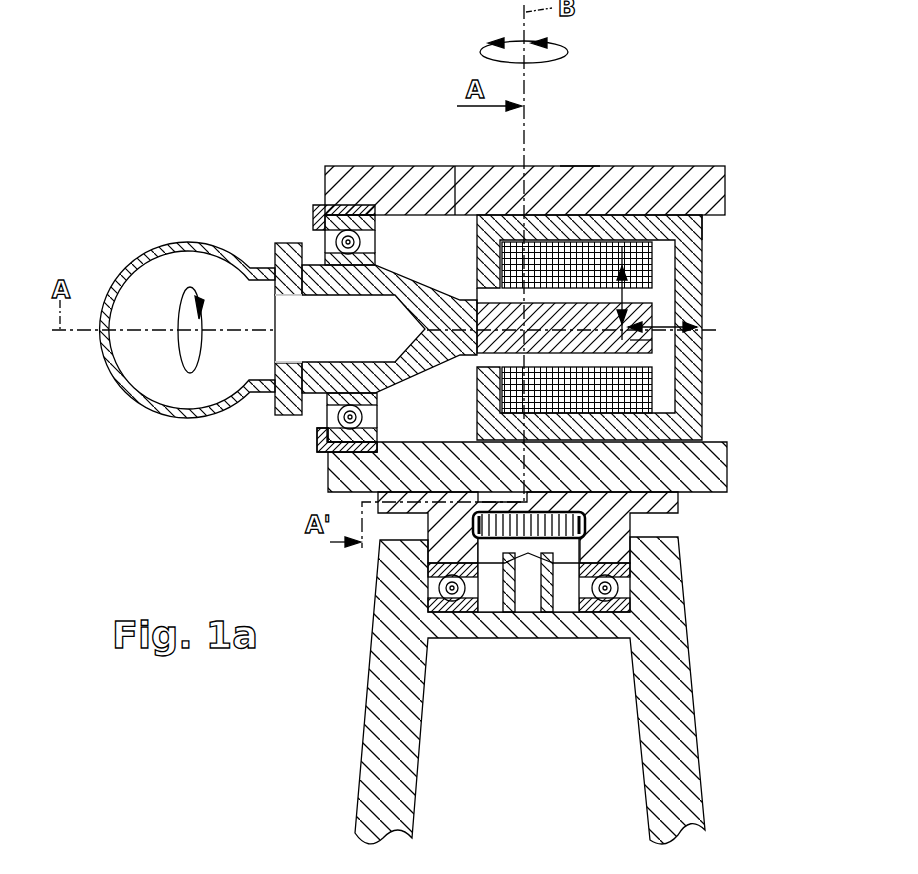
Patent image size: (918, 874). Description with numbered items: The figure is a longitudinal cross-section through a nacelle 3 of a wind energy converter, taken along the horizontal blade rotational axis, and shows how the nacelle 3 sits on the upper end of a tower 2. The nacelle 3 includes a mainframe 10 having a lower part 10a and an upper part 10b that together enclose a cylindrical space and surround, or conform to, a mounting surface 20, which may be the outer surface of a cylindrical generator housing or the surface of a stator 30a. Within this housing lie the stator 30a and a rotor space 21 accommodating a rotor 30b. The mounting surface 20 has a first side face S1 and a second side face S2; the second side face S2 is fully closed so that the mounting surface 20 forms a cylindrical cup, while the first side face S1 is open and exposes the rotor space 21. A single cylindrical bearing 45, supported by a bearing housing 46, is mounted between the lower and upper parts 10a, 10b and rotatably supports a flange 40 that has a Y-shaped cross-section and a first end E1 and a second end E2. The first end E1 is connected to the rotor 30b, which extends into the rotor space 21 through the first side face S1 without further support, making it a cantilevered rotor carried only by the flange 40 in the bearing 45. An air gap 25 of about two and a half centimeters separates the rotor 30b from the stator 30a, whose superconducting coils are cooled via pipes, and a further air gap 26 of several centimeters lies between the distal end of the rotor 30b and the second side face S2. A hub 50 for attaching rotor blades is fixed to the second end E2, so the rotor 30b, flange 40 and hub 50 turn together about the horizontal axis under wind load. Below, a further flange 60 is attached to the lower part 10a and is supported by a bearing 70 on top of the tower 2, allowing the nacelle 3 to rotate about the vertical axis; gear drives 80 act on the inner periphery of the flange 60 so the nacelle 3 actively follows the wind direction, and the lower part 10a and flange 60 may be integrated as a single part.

The tower 2 is at (670, 715).
The nacelle 3 is at (684, 126).
The mainframe 10 is at (722, 182).
The lower part 10a is at (698, 467).
The upper part 10b is at (582, 185).
The mounting surface 20 is at (687, 312).
The rotor space 21 is at (478, 365).
The air gap 25 is at (625, 292).
The air gap 26 is at (660, 330).
The stator 30a is at (642, 258).
The rotor 30b is at (637, 343).
The flange 40 is at (403, 369).
The bearing 45 is at (362, 242).
The bearing housing 46 is at (318, 210).
The hub 50 is at (180, 243).
The flange 60 is at (663, 502).
The bearing 70 is at (453, 600).
The gear drives 80 is at (537, 585).
The first end E1 is at (482, 293).
The second end E2 is at (273, 262).
The first side face S1 is at (476, 229).
The second side face S2 is at (703, 235).